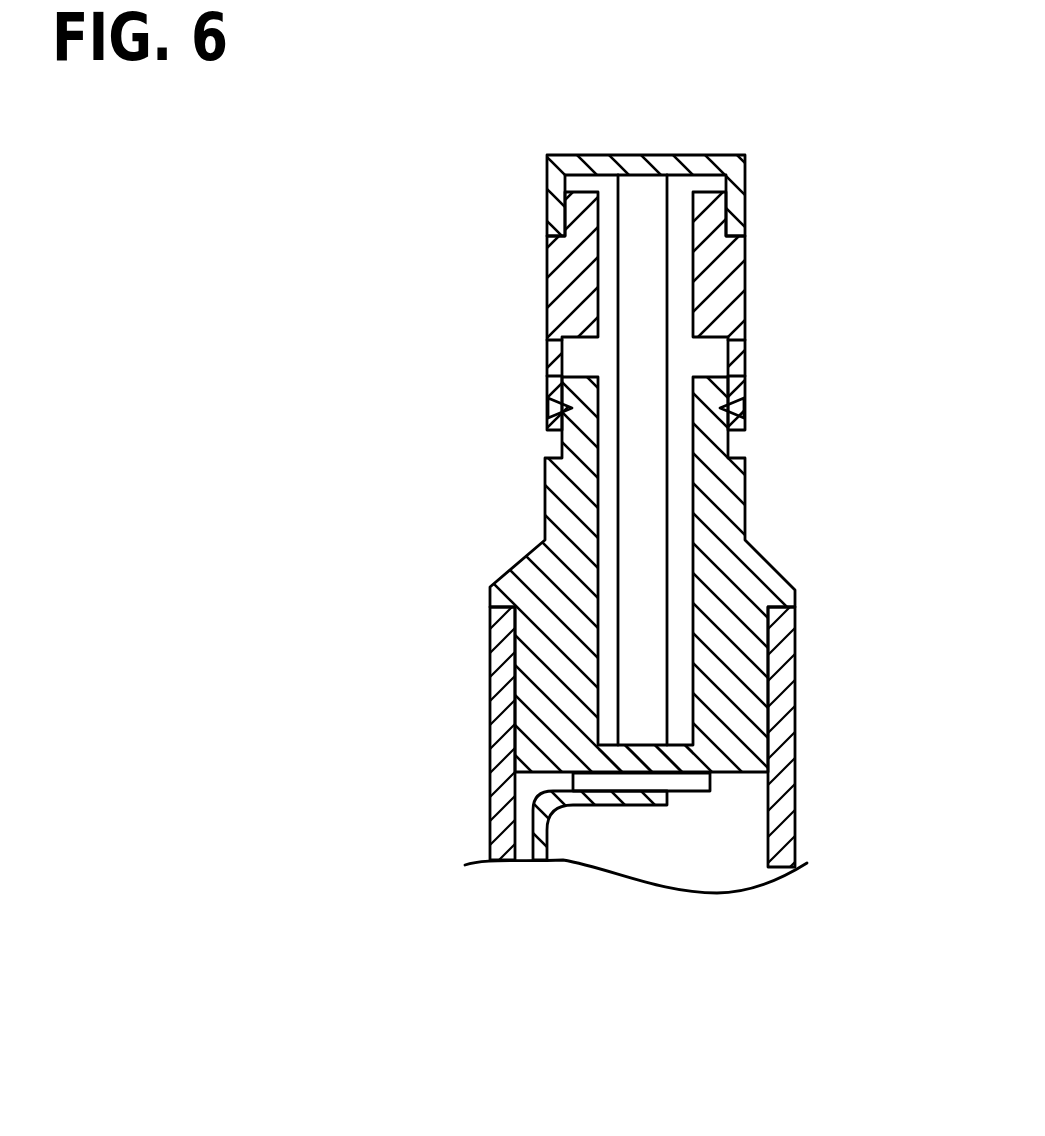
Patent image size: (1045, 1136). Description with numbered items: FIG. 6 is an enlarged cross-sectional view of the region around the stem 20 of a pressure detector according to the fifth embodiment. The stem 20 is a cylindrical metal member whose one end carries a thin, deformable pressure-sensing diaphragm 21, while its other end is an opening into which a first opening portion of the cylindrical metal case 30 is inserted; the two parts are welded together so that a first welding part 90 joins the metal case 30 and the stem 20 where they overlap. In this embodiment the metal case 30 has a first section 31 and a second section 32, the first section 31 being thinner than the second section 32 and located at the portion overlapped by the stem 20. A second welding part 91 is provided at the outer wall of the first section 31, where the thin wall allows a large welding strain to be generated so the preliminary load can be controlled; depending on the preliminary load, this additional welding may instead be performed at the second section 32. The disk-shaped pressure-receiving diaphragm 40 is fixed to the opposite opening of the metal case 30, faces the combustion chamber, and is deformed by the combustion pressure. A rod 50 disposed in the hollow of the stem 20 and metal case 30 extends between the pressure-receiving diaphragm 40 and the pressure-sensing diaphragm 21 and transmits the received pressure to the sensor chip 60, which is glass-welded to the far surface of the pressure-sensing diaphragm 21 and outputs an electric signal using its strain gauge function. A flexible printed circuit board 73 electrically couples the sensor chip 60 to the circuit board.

The stem 20 is at (528, 660).
The pressure-sensing diaphragm 21 is at (650, 753).
The metal case 30 is at (397, 153).
The first section 31 is at (583, 337).
The second section 32 is at (565, 245).
The pressure-receiving diaphragm 40 is at (693, 163).
The rod 50 is at (645, 500).
The sensor chip 60 is at (712, 779).
The flexible printed circuit board 73 is at (538, 836).
The first welding part 90 is at (548, 408).
The second welding part 91 is at (547, 352).